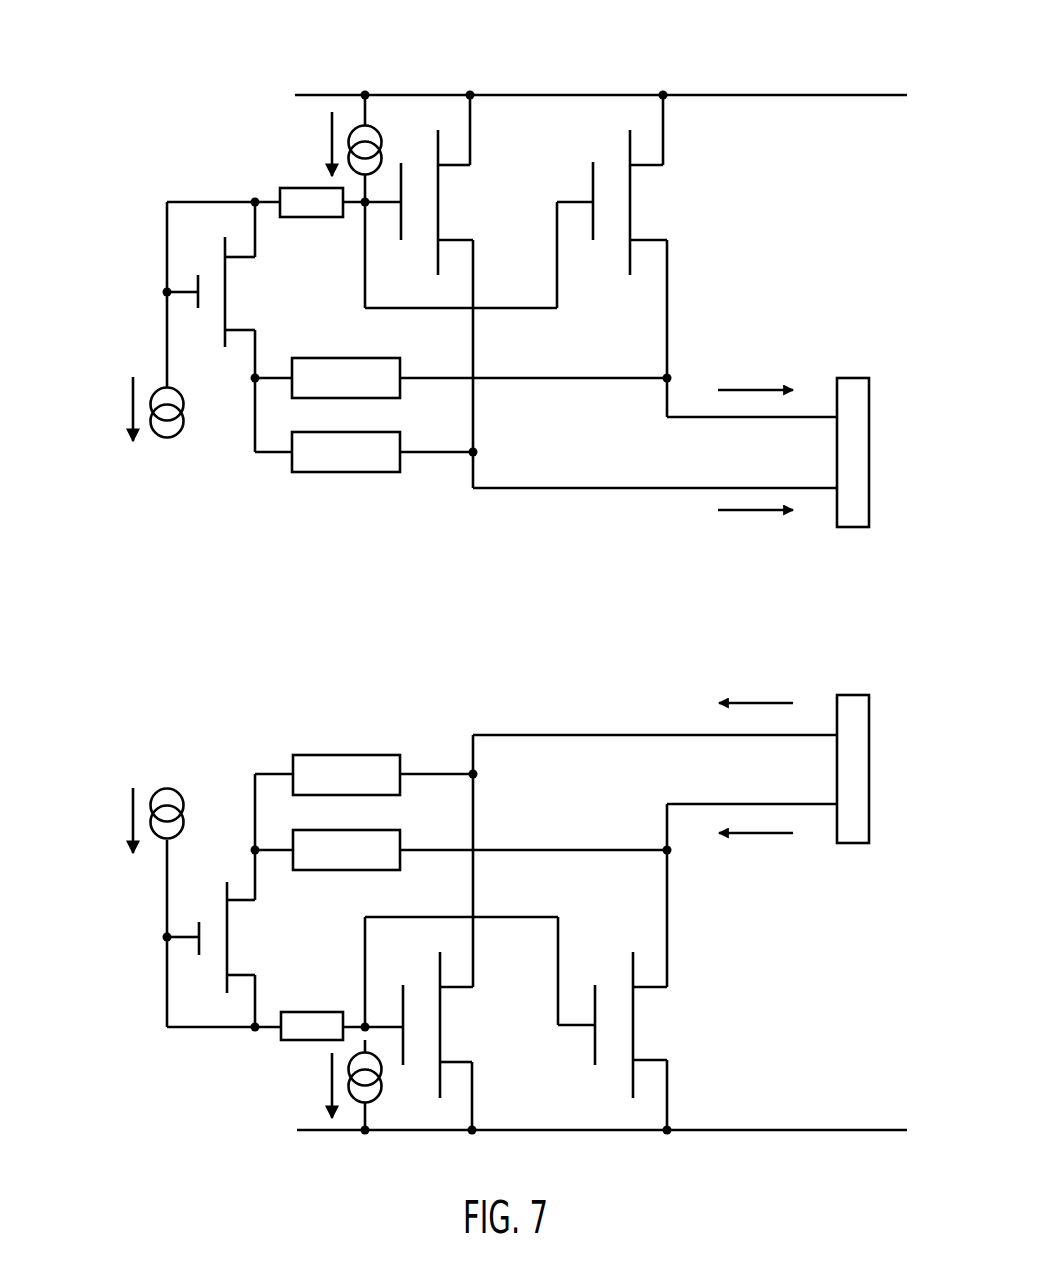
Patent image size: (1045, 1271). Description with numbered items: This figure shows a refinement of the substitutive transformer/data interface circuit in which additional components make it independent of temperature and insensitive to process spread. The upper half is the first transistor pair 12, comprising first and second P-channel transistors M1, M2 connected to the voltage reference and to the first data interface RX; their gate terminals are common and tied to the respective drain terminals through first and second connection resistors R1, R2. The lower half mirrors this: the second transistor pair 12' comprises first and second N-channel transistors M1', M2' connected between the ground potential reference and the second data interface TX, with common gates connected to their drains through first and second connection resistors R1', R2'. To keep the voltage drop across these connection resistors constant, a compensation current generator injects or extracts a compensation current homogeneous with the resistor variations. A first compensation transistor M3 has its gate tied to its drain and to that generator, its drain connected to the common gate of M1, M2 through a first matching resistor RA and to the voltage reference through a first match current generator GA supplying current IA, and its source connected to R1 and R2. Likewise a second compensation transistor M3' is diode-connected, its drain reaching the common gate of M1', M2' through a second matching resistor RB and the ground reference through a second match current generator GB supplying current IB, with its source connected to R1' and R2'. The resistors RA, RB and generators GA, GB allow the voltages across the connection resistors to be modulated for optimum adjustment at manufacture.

The first transistor pair 12 is at (491, 284).
The second transistor pair 12' is at (492, 945).
The first P-channel transistor M1 is at (619, 291).
The second P-channel transistor M2 is at (715, 256).
The first compensation transistor M3 is at (249, 327).
The first N-channel transistor M1' is at (620, 932).
The second N-channel transistor M2' is at (716, 967).
The second compensation transistor M3' is at (254, 900).
The first matching resistor RA is at (303, 198).
The second matching resistor RB is at (305, 1030).
The first connection resistor R1 is at (461, 358).
The second connection resistor R2 is at (366, 474).
The first connection resistor R1' is at (366, 753).
The second connection resistor R2' is at (461, 871).
The first match current generator GA is at (380, 148).
The second match current generator GB is at (381, 1085).
The current IA is at (317, 144).
The current IB is at (318, 1085).
The first data interface RX is at (872, 450).
The second data interface TX is at (872, 770).